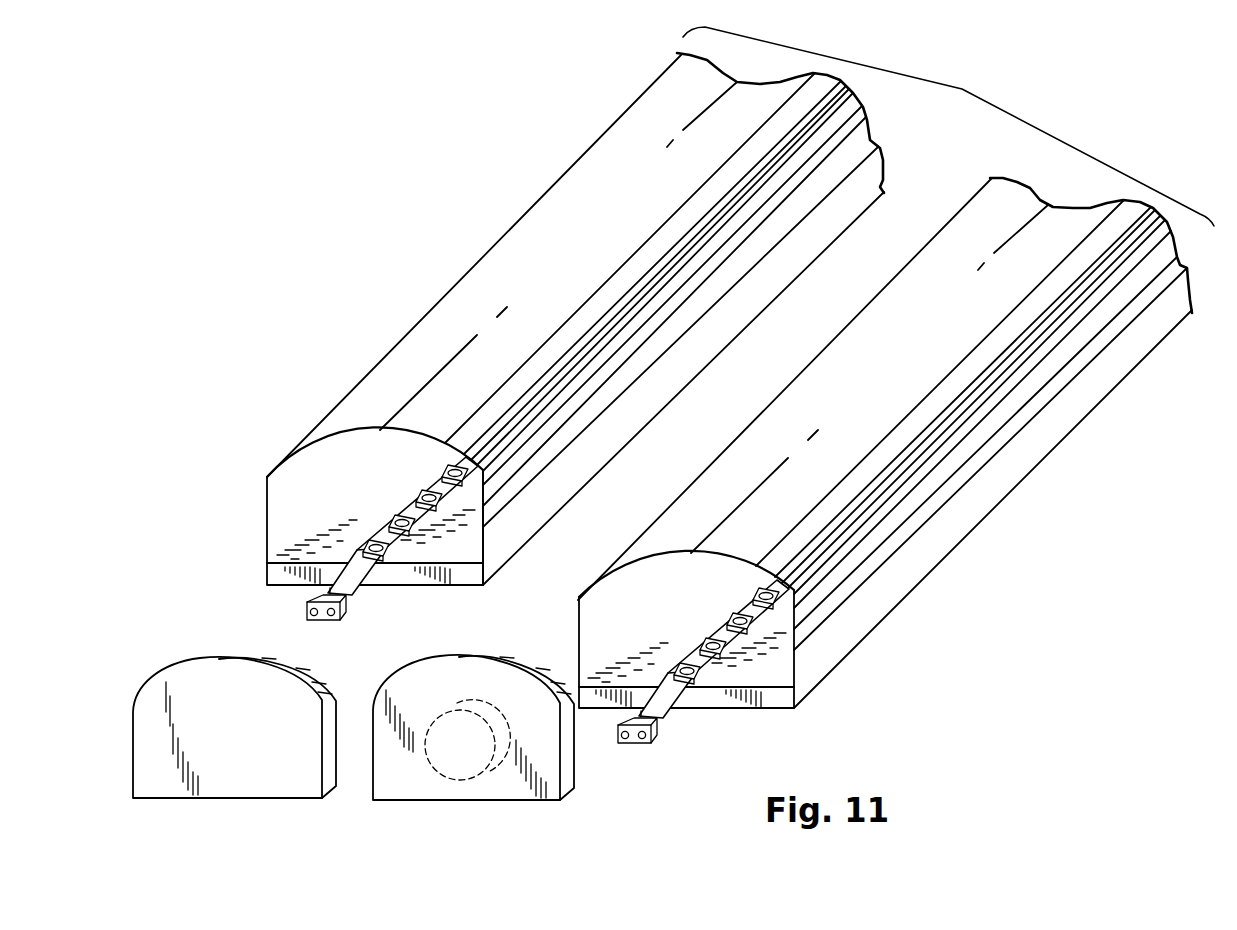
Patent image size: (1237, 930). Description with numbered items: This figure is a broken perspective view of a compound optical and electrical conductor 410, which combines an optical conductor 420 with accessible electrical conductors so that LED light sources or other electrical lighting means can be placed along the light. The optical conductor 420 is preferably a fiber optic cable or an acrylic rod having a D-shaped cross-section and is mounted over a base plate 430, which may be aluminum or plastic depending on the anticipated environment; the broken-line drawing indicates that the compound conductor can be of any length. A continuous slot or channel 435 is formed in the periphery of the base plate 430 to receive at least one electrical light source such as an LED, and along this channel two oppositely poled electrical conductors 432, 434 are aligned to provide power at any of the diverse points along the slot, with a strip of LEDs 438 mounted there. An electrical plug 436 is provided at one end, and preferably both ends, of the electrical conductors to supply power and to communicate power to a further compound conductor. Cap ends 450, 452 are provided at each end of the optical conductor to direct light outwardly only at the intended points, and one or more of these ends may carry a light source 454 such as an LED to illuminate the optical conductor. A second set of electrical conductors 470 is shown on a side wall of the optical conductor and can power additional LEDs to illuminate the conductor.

The lighting assembly 410 is at (410, 271).
The optical conductor 420 is at (512, 262).
The base plate 430 is at (264, 574).
The electrical conductor 432 is at (350, 586).
The electrical conductor 434 is at (328, 590).
The channel 435 is at (481, 585).
The electrical plug 436 is at (320, 625).
The LED strip 438 is at (383, 527).
The cap end 450 is at (207, 637).
The cap end 452 is at (527, 768).
The light source 454 is at (464, 768).
The second set of electrical conductors 470 is at (540, 477).